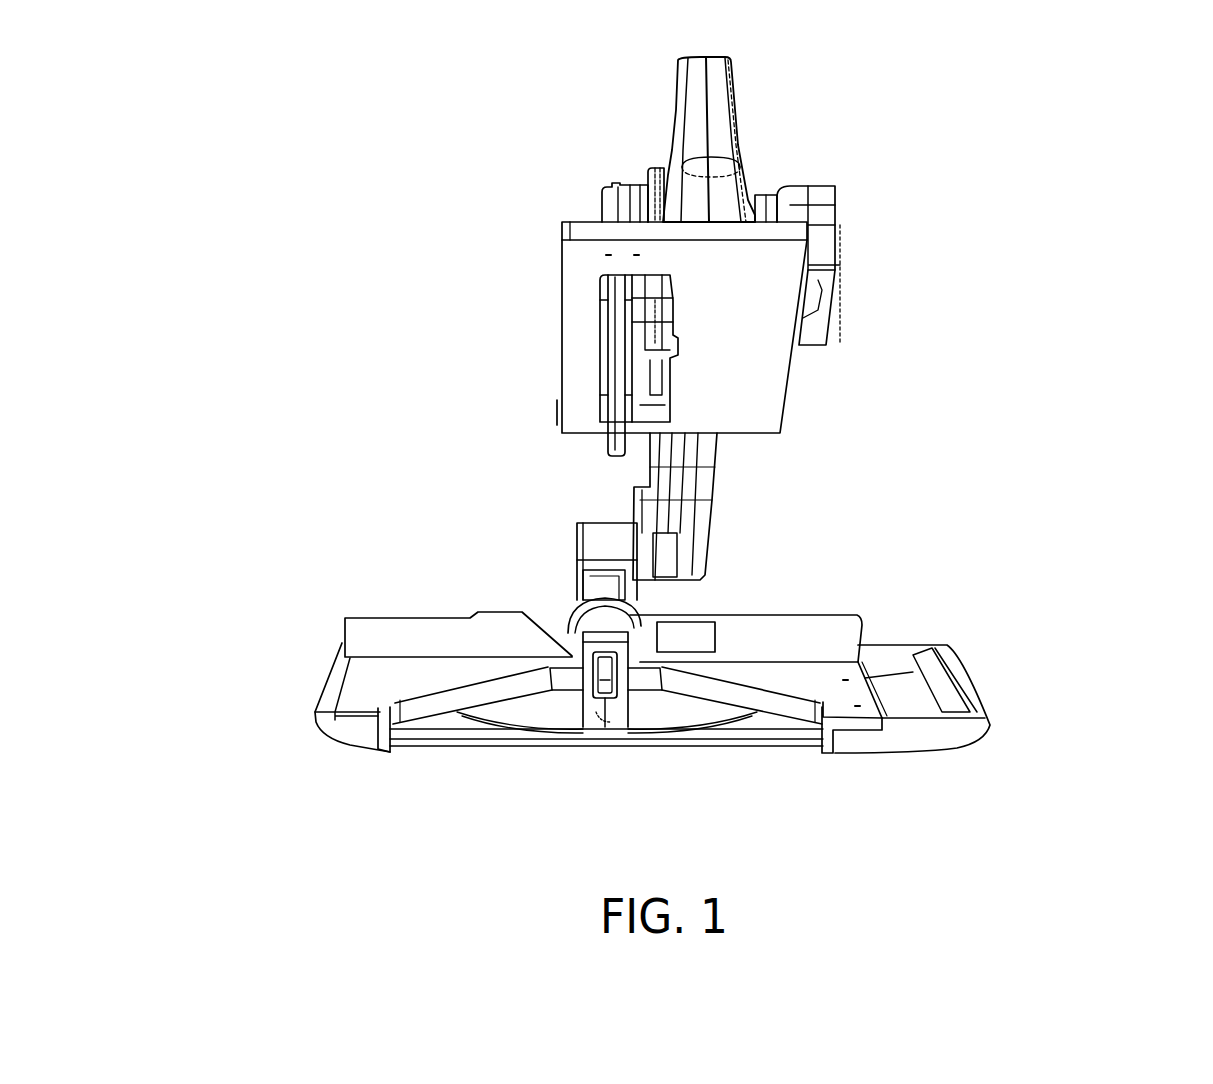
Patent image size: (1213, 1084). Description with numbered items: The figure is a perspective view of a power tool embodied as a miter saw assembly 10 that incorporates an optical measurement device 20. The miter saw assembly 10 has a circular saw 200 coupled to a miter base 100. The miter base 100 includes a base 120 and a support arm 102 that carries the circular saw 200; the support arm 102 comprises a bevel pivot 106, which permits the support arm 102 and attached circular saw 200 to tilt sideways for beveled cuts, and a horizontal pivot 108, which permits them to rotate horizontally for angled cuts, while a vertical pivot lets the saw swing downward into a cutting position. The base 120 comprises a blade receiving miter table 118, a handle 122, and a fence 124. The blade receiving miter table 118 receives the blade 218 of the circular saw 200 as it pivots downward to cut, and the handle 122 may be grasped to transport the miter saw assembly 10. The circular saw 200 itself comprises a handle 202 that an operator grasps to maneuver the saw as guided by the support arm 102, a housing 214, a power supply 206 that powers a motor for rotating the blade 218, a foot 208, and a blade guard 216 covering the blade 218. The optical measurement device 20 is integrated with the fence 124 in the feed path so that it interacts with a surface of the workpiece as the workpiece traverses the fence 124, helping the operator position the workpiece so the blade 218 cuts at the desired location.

The miter saw assembly 10 is at (336, 214).
The optical measurement device 20 is at (716, 632).
The miter base 100 is at (1090, 651).
The support arm 102 is at (458, 504).
The bevel pivot 106 is at (637, 607).
The horizontal pivot 108 is at (578, 641).
The blade receiving miter table 118 is at (605, 695).
The base 120 is at (392, 676).
The handle 122 is at (965, 697).
The fence 124 is at (733, 632).
The circular saw 200 is at (960, 294).
The handle 202 is at (722, 73).
The power supply 206 is at (820, 240).
The foot 208 is at (767, 407).
The housing 214 is at (617, 183).
The blade guard 216 is at (620, 356).
The blade 218 is at (600, 312).